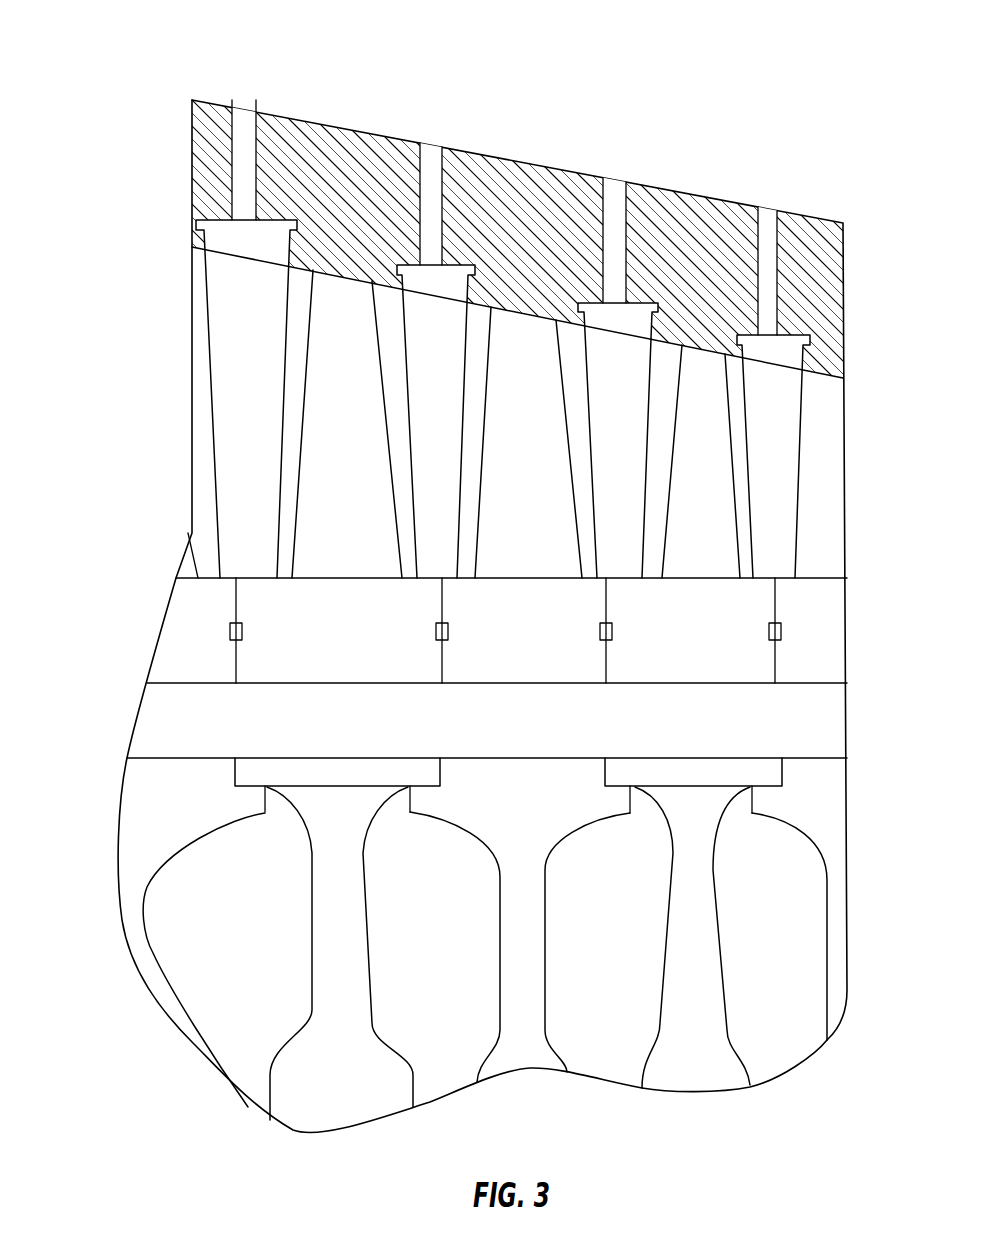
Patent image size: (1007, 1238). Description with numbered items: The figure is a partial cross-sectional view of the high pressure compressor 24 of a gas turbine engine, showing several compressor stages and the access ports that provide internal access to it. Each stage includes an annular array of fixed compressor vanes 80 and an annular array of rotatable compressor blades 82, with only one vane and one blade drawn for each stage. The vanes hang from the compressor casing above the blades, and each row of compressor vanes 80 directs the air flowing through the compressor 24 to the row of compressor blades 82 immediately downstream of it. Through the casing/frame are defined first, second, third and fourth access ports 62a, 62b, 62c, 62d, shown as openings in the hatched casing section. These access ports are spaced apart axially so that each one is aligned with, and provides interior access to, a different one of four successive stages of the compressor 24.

The high pressure compressor 24 is at (118, 130).
The first access port 62a is at (238, 88).
The second access port 62b is at (428, 128).
The third access port 62c is at (614, 166).
The fourth access port 62d is at (767, 196).
The fixed compressor vanes 80 is at (785, 447).
The rotatable compressor blades 82 is at (715, 452).